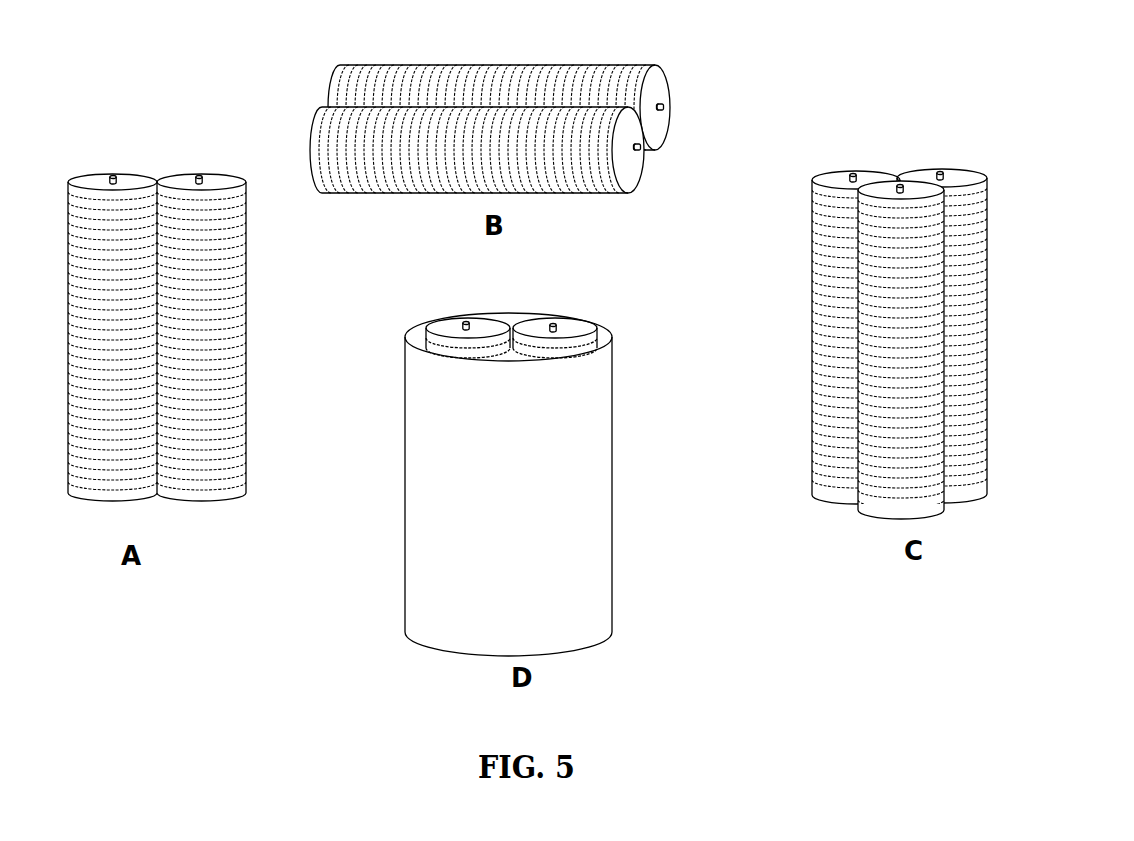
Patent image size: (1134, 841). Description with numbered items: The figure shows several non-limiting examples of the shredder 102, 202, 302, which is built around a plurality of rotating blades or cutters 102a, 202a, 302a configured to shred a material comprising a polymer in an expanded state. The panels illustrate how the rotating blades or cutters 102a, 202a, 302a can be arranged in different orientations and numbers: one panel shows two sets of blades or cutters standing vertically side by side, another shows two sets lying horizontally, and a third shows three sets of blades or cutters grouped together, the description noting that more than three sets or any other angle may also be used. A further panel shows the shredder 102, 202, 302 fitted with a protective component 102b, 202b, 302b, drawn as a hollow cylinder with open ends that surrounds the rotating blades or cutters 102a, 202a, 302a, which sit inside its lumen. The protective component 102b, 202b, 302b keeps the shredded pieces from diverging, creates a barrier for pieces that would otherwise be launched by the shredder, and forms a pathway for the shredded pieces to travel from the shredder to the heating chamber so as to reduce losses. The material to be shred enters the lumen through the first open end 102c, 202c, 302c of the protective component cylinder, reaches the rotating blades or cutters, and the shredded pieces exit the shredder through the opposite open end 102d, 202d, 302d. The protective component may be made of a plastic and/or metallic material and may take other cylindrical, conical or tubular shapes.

The shredder 102 is at (532, 105).
The shredder 202 is at (532, 105).
The shredder 302 is at (532, 105).
The rotating blades or cutters 102a is at (527, 264).
The rotating blades or cutters 202a is at (527, 264).
The rotating blades or cutters 302a is at (220, 162).
The protective component 102b is at (506, 465).
The protective component 202b is at (506, 465).
The protective component 302b is at (614, 496).
The first open end of the protective component cylinder 102c is at (569, 317).
The first open end of the protective component cylinder 202c is at (569, 317).
The first open end of the protective component cylinder 302c is at (614, 337).
The opposite open end of the protective component cylinder 102d is at (441, 609).
The opposite open end of the protective component cylinder 202d is at (441, 609).
The opposite open end of the protective component cylinder 302d is at (404, 640).